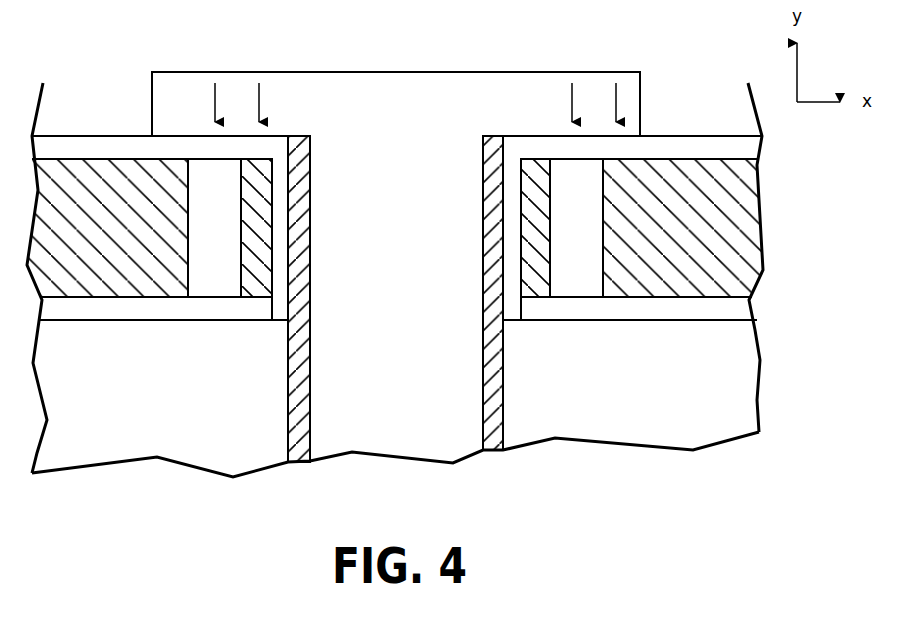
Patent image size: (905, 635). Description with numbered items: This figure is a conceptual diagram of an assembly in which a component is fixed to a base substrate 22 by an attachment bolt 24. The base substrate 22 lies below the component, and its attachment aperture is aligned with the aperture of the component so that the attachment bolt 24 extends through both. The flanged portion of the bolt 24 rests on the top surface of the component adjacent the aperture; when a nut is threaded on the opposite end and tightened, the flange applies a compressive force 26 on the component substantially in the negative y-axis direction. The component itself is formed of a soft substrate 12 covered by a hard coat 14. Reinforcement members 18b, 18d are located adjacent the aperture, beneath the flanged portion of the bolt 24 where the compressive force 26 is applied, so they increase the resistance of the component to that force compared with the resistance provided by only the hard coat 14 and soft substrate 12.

The soft substrate 12 is at (98, 249).
The hard coat 14 is at (657, 136).
The reinforcement member 18b is at (568, 275).
The reinforcement member 18d is at (223, 283).
The base substrate 22 is at (165, 432).
The attachment bolt 24 is at (476, 72).
The compressive force 26 is at (415, 102).